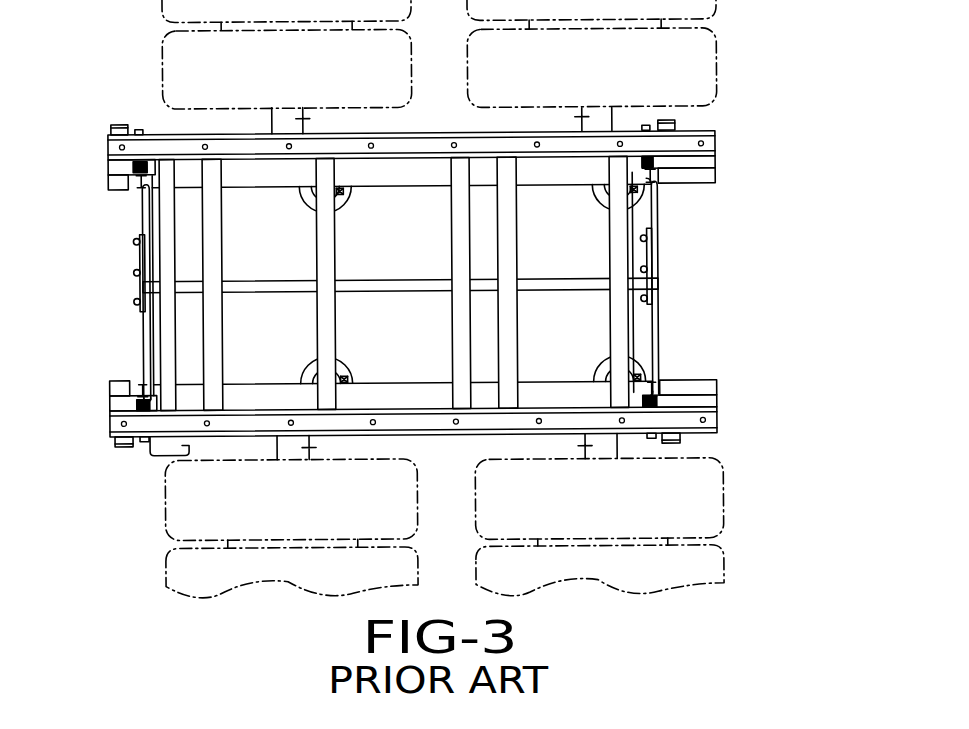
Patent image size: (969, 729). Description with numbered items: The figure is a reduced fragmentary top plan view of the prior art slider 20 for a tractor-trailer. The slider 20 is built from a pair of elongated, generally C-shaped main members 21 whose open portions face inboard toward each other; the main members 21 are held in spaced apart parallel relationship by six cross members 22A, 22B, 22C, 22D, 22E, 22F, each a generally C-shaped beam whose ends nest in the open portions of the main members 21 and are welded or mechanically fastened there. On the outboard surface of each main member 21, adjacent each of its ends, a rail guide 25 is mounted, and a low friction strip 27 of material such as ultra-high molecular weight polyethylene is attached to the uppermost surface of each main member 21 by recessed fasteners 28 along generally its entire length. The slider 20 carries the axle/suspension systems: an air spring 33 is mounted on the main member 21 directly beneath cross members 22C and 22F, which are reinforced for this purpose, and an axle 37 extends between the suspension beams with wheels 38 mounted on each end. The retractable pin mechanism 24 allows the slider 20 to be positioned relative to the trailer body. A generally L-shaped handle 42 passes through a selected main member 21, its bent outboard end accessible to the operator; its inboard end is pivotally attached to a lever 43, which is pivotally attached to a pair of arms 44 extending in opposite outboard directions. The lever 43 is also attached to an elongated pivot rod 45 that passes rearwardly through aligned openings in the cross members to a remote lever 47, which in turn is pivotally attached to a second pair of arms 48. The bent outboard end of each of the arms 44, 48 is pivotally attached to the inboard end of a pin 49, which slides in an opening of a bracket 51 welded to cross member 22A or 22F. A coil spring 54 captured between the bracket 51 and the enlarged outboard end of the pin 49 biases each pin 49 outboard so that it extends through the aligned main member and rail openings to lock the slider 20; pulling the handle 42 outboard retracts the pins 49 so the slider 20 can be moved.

The slider 20 is at (709, 283).
The main member 21 is at (726, 161).
The cross member 22A is at (150, 340).
The cross member 22B is at (225, 325).
The cross member 22C is at (338, 262).
The cross member 22D is at (447, 316).
The cross member 22E is at (518, 260).
The cross member 22F is at (609, 317).
The retractable pin mechanism 24 is at (669, 323).
The rail guide 25 is at (120, 126).
The low friction strip 27 is at (447, 146).
The recessed fastener 28 is at (203, 147).
The air spring 33 is at (353, 198).
The axle 37 is at (300, 127).
The wheel 38 is at (268, 77).
The handle 42 is at (170, 460).
The lever 43 is at (143, 260).
The arm 44 is at (148, 213).
The pivot rod 45 is at (265, 293).
The remote lever 47 is at (656, 251).
The arm 48 is at (655, 210).
The pin 49 is at (140, 130).
The bracket 51 is at (136, 175).
The coil spring 54 is at (135, 164).